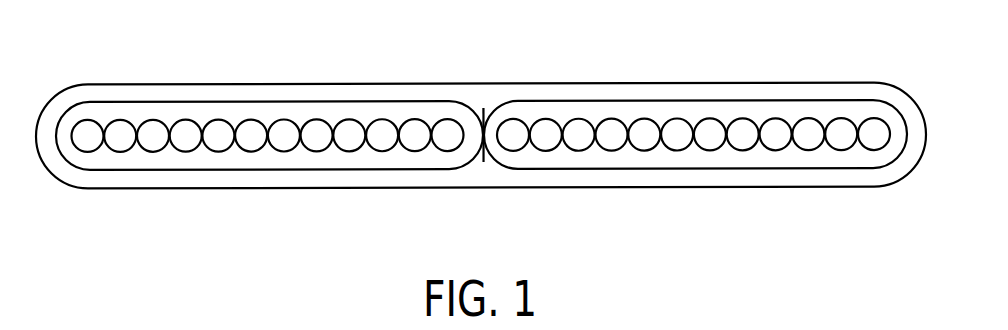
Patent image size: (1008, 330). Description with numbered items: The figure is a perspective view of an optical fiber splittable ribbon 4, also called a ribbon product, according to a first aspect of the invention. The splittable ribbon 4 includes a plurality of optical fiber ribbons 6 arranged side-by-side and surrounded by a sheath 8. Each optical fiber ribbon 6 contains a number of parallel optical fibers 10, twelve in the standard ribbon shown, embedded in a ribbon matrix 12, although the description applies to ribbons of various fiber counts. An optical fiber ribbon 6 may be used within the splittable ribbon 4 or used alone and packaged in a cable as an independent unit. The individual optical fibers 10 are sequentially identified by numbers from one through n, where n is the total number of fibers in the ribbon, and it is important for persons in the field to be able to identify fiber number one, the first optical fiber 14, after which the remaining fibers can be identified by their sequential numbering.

The optical fiber splittable ribbon 4 is at (373, 215).
The optical fiber ribbon 6 is at (482, 132).
The sheath 8 is at (481, 102).
The optical fiber 10 is at (477, 135).
The ribbon matrix 12 is at (316, 110).
The first optical fiber 14 is at (93, 141).